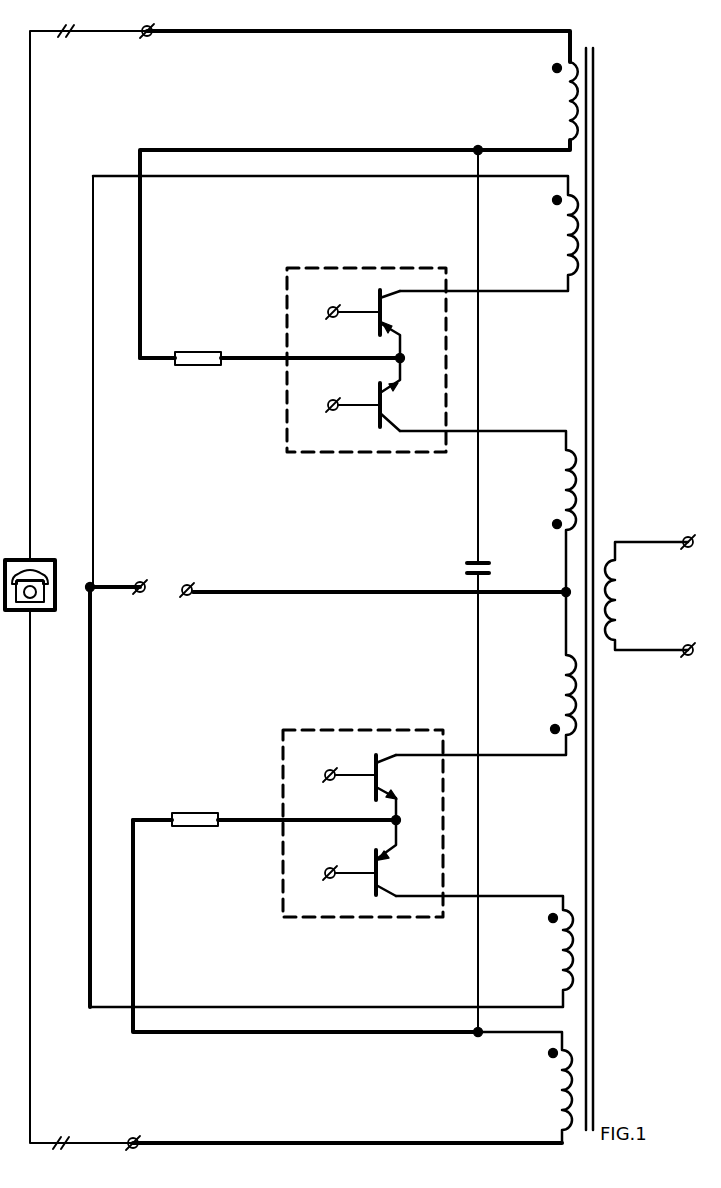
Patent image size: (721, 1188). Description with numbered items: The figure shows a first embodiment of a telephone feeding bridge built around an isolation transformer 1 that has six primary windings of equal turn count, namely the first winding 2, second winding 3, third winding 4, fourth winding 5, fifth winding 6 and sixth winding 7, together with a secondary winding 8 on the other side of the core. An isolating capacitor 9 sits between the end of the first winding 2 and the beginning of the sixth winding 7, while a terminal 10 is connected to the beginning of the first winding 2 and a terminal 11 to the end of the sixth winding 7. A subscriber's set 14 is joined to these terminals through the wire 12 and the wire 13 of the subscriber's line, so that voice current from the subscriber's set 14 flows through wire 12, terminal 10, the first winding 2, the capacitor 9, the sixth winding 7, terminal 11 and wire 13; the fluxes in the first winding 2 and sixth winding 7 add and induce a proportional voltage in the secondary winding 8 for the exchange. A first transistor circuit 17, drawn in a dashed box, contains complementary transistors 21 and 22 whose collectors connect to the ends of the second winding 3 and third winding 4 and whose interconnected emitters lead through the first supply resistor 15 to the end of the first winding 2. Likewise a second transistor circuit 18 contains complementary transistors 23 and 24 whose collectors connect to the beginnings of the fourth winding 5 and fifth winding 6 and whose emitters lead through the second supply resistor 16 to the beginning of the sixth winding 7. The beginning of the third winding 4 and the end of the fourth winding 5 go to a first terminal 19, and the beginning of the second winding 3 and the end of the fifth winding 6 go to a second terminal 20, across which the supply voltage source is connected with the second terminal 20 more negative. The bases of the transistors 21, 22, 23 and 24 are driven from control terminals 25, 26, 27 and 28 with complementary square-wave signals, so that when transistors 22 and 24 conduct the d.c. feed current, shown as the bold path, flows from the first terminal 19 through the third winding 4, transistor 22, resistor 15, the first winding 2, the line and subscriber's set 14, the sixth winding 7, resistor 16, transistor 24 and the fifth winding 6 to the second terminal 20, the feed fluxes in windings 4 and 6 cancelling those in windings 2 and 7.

The isolation transformer 1 is at (592, 53).
The first winding 2 is at (564, 120).
The second winding 3 is at (564, 238).
The third winding 4 is at (565, 490).
The fourth winding 5 is at (562, 696).
The fifth winding 6 is at (565, 940).
The sixth winding 7 is at (563, 1088).
The secondary winding 8 is at (617, 618).
The isolating capacitor 9 is at (470, 560).
The terminal 10 is at (151, 36).
The terminal 11 is at (134, 1137).
The wire 12 is at (31, 370).
The wire 13 is at (31, 810).
The subscriber's set 14 is at (40, 559).
The first supply resistor 15 is at (196, 352).
The second supply resistor 16 is at (203, 813).
The first transistor circuit 17 is at (357, 267).
The second transistor circuit 18 is at (352, 728).
The first terminal 19 is at (190, 597).
The second terminal 20 is at (143, 594).
The transistor 21 is at (372, 322).
The transistor 22 is at (370, 422).
The transistor 23 is at (372, 786).
The transistor 24 is at (372, 884).
The control terminal 25 is at (328, 308).
The control terminal 26 is at (328, 400).
The control terminal 27 is at (325, 771).
The control terminal 28 is at (325, 868).